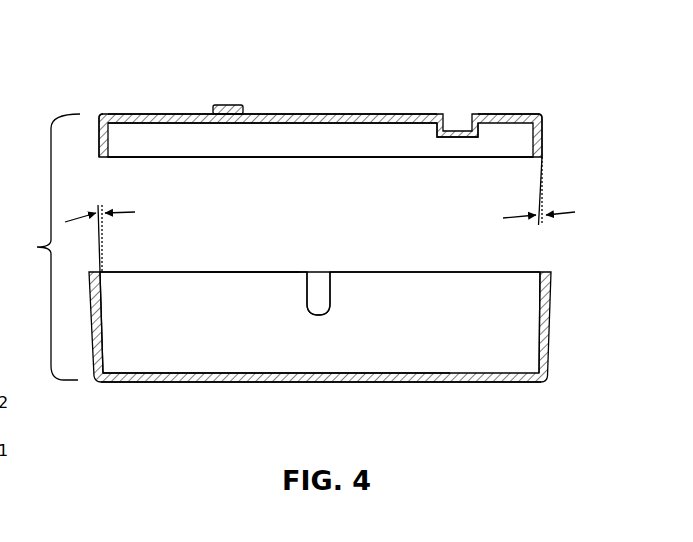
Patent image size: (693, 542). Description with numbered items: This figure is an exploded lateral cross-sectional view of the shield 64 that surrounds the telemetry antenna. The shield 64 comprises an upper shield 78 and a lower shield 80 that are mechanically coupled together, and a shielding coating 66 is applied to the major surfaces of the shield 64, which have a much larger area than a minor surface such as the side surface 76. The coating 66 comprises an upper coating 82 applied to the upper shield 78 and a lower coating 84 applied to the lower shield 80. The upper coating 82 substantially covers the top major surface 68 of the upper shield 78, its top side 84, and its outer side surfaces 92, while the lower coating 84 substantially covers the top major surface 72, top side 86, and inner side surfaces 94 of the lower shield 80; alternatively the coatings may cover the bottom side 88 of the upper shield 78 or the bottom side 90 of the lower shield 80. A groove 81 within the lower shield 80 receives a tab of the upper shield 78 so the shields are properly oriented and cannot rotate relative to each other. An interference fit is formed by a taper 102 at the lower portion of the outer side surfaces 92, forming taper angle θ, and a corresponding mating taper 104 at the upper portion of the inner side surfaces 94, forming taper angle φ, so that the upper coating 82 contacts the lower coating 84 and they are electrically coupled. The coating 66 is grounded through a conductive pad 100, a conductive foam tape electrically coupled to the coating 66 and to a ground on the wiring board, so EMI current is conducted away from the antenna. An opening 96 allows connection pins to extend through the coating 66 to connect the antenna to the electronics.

The shield 64 is at (37, 247).
The shielding coating 66 is at (511, 110).
The first major surface 68 is at (263, 114).
The second major surface 72 is at (263, 372).
The side surface 76 is at (548, 328).
The upper shield 78 is at (303, 118).
The lower shield 80 is at (498, 380).
The groove 81 is at (332, 295).
The upper coating 82 is at (202, 114).
The lower coating 84 is at (366, 96).
The top side of lower shield 86 is at (240, 258).
The bottom side of upper shield 88 is at (407, 163).
The bottom side of lower shield 90 is at (388, 386).
The outer side surfaces 92 is at (100, 140).
The inner side surfaces 94 is at (102, 355).
The opening 96 is at (458, 122).
The conductive pad 100 is at (228, 105).
The taper 102 is at (548, 150).
The mating taper 104 is at (106, 287).